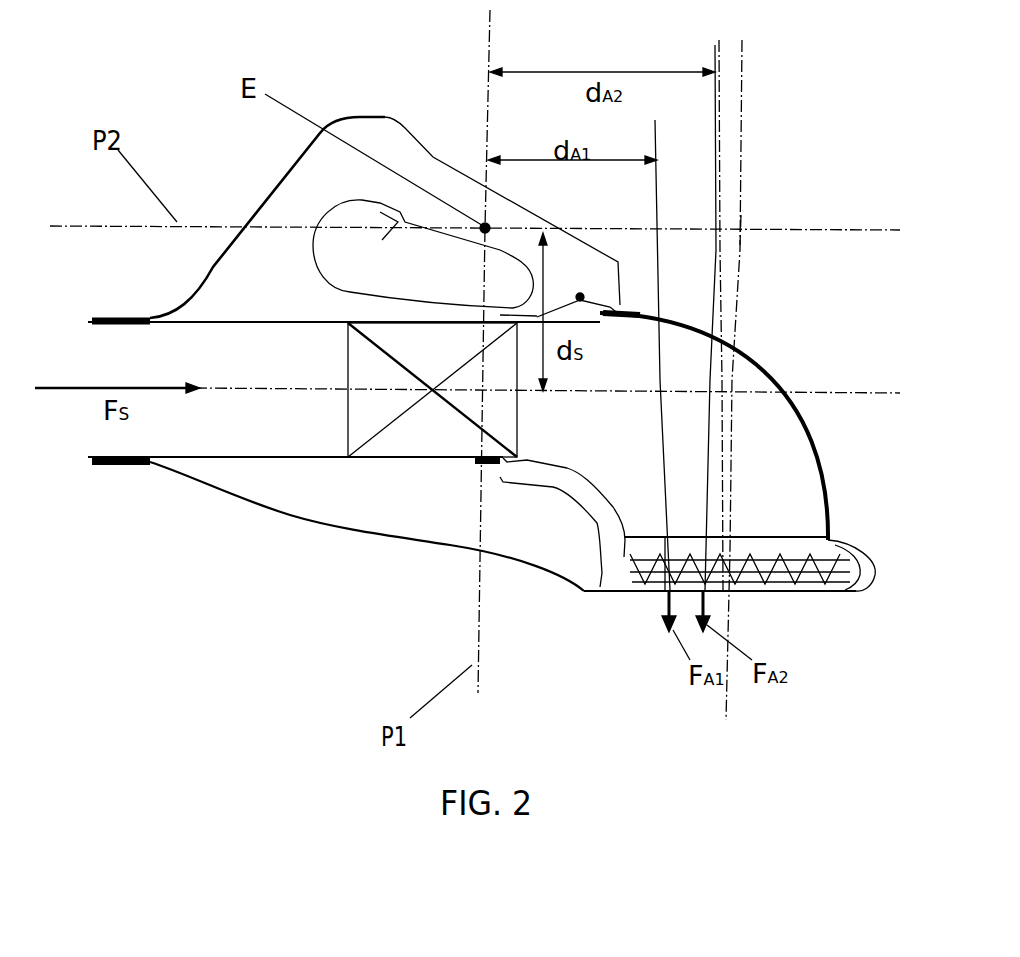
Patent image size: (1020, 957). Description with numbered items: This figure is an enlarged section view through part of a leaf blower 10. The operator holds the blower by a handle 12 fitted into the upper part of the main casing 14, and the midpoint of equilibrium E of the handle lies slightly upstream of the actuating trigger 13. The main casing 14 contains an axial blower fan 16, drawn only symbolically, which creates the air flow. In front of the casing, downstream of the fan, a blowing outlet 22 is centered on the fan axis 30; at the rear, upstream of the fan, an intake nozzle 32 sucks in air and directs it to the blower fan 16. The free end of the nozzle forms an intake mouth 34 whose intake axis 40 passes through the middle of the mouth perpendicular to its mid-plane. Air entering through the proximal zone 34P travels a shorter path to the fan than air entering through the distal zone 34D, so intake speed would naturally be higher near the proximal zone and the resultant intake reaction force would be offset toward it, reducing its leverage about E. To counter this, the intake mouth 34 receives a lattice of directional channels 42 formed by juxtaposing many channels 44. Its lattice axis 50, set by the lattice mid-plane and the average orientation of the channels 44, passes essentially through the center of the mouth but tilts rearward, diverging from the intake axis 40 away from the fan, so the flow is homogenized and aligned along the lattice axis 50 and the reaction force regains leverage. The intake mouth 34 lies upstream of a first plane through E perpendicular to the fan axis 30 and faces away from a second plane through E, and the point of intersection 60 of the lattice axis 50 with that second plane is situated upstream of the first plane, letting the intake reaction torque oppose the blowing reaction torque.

The vacuum cleaner suction nozzle housing 10 is at (795, 367).
The handle 12 is at (458, 182).
The actuating trigger 13 is at (383, 243).
The main casing 14 is at (310, 518).
The axial blower fan 16 is at (452, 475).
The blowing outlet 22 is at (92, 468).
The fan axis 30 is at (290, 390).
The intake nozzle 32 is at (785, 490).
The intake mouth 34 is at (600, 598).
The proximal zone 34P is at (638, 605).
The distal zone 34D is at (813, 605).
The intake axis 40 is at (679, 302).
The lattice of directional channels 42 is at (815, 575).
The channels 44 is at (745, 593).
The lattice axis 50 is at (746, 80).
The point of intersection 60 is at (740, 230).